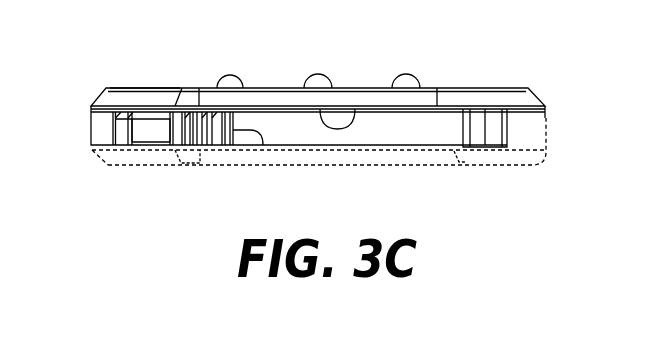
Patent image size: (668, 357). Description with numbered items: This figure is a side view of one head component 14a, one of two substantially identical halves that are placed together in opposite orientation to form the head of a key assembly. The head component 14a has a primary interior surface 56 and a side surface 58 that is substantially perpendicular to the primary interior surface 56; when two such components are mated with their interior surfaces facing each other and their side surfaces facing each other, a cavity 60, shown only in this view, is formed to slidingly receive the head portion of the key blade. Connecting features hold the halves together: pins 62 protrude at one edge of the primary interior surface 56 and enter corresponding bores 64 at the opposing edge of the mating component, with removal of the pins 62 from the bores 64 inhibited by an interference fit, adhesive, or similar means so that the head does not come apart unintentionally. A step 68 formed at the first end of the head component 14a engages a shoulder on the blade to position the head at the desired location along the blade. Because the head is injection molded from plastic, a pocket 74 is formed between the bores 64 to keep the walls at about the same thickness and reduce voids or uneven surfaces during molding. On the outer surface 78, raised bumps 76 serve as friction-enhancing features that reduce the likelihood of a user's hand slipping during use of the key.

The head component 14a is at (594, 108).
The primary interior surface 56 is at (357, 117).
The side surface 58 is at (263, 147).
The cavity 60 is at (430, 124).
The pin 62 is at (508, 125).
The bore 64 is at (145, 135).
The step 68 is at (187, 127).
The pocket 74 is at (118, 123).
The raised bump 76 is at (230, 74).
The outer surface 78 is at (132, 86).